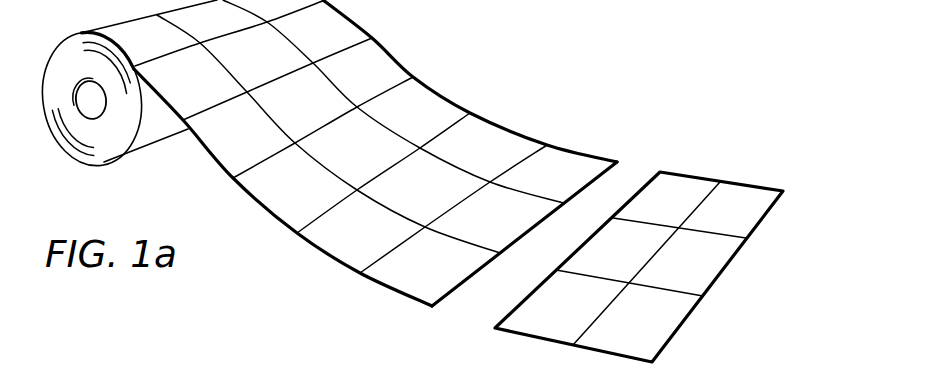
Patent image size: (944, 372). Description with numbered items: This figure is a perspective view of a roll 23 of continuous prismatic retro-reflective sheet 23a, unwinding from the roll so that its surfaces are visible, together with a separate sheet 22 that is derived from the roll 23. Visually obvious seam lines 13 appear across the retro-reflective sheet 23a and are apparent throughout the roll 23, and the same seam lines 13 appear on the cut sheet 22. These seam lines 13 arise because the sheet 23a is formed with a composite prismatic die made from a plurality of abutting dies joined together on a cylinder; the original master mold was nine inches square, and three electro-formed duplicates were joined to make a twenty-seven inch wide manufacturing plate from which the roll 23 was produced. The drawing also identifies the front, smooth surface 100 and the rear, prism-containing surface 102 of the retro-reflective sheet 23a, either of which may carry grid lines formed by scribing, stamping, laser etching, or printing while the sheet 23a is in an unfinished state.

The roll 23 is at (118, 143).
The retro-reflective sheet 23a is at (266, 213).
The front smooth surface 100 is at (567, 167).
The rear prism-containing surface 102 is at (425, 287).
The sheet 22 is at (688, 193).
The seam lines 13 is at (730, 235).